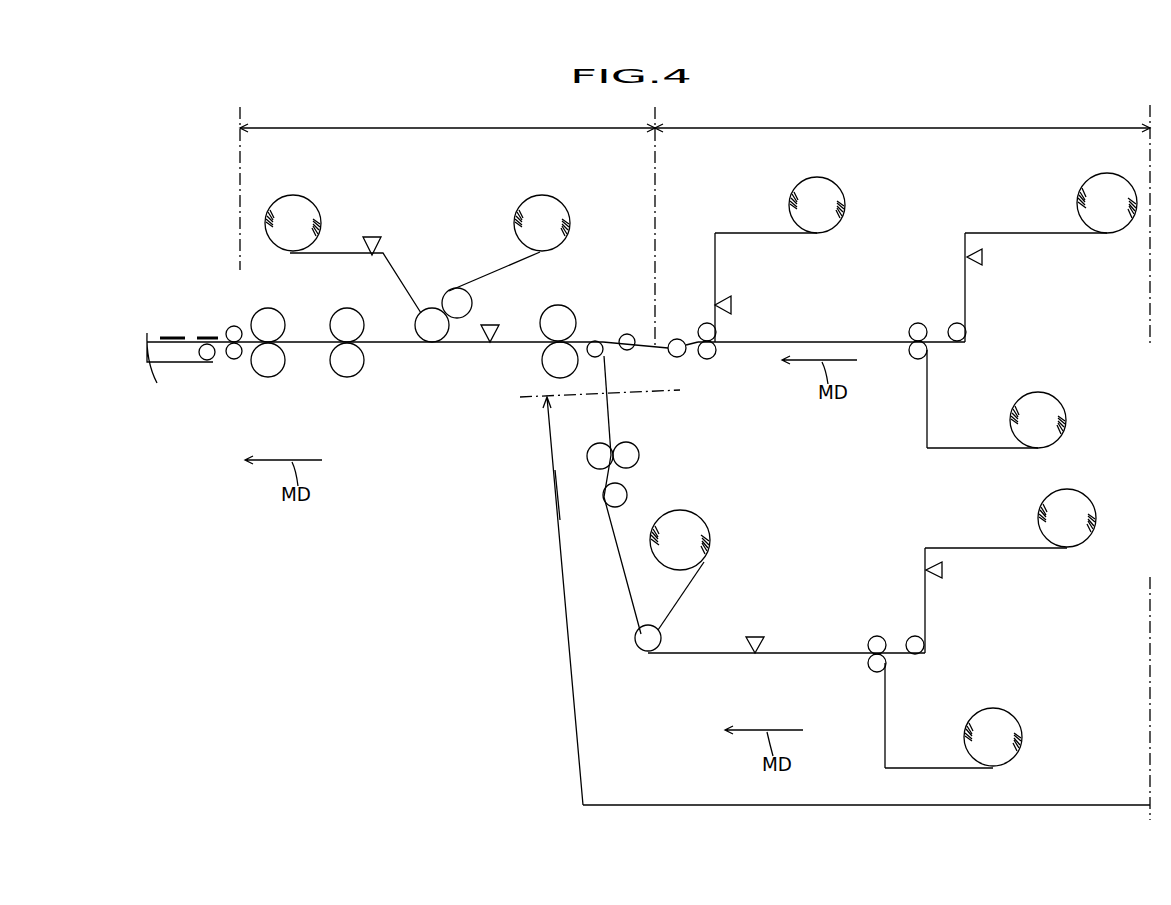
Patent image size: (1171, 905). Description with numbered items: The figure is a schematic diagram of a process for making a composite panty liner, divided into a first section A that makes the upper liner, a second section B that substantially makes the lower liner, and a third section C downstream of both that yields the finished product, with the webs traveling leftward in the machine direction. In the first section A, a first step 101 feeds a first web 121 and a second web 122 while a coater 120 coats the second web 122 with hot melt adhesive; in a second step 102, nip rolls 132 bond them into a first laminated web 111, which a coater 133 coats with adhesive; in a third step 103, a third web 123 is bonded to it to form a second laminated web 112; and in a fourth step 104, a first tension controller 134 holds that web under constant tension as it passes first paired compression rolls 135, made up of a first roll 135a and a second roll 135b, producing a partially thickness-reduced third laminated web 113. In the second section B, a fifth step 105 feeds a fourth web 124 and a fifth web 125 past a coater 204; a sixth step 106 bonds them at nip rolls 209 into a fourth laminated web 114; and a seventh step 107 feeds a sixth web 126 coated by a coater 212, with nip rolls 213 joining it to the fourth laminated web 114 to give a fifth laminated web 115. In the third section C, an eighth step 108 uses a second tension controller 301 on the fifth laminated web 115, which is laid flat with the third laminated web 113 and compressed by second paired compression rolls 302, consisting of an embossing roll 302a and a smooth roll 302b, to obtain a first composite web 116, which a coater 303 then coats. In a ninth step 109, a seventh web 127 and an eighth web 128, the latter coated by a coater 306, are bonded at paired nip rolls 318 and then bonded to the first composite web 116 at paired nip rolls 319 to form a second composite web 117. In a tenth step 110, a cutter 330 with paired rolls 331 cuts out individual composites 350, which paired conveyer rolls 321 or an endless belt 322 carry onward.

The first step 101 is at (947, 507).
The second step 102 is at (849, 678).
The third step 103 is at (590, 571).
The fourth step 104 is at (570, 483).
The fifth step 105 is at (950, 212).
The sixth step 106 is at (891, 292).
The seventh step 107 is at (701, 184).
The eighth step 108 is at (580, 396).
The ninth step 109 is at (436, 358).
The tenth step 110 is at (268, 391).
The first laminated web 111 is at (793, 657).
The second laminated web 112 is at (608, 533).
The third laminated web 113 is at (612, 402).
The fourth laminated web 114 is at (835, 340).
The fifth laminated web 115 is at (665, 350).
The first composite web 116 is at (523, 343).
The second composite web 117 is at (299, 340).
The coater 120 is at (934, 580).
The first web 121 is at (931, 769).
The second web 122 is at (995, 547).
The third web 123 is at (690, 588).
The fourth web 124 is at (967, 447).
The fifth web 125 is at (1007, 232).
The sixth web 126 is at (758, 232).
The seventh web 127 is at (497, 270).
The eighth web 128 is at (340, 253).
The nip rolls 132 is at (875, 637).
The coater 133 is at (757, 635).
The first tension controller 134 is at (628, 488).
The first paired compression rolls 135 is at (665, 433).
The first roll 135a is at (604, 447).
The second roll 135b is at (628, 446).
The coater 204 is at (984, 256).
The nip rolls 209 is at (918, 323).
The coater 212 is at (733, 305).
The nip rolls 213 is at (717, 331).
The second tension controller 301 is at (630, 334).
The second paired compression rolls 302 is at (596, 304).
The roll 302a is at (568, 356).
The roll 302b is at (565, 317).
The coater 303 is at (495, 323).
The coater 306 is at (374, 236).
The paired nip rolls 318 is at (424, 317).
The paired nip rolls 319 is at (353, 324).
The paired conveyer rolls 321 is at (234, 359).
The endless belt 322 is at (171, 371).
The cutter 330 is at (278, 296).
The paired rolls 331 is at (262, 351).
The individual composites 350 is at (205, 338).
The first section A is at (778, 806).
The second section B is at (903, 127).
The third section C is at (418, 127).